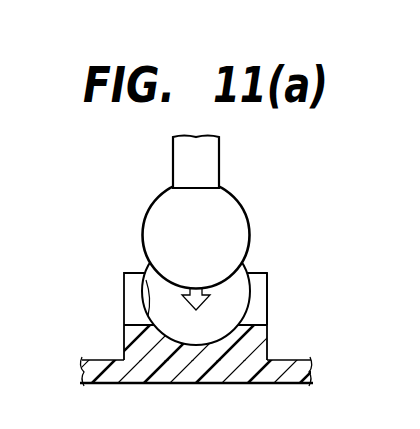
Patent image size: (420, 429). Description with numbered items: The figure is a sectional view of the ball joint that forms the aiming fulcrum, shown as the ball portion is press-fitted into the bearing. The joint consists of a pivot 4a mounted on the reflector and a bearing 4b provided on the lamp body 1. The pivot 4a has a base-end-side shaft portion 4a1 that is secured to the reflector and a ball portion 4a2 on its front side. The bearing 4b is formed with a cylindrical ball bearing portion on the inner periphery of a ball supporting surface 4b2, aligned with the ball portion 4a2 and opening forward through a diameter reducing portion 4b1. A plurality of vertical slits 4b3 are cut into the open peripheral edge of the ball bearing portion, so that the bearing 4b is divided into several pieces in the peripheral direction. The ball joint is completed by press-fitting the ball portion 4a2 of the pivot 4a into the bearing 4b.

The lamp body 1 is at (288, 361).
The pivot 4a is at (183, 212).
The base-end-side shaft portion 4a1 is at (207, 157).
The ball portion 4a2 is at (227, 205).
The bearing 4b is at (209, 302).
The diameter reducing portion 4b1 is at (245, 262).
The ball supporting surface 4b2 is at (140, 318).
The vertical slits 4b3 is at (258, 291).